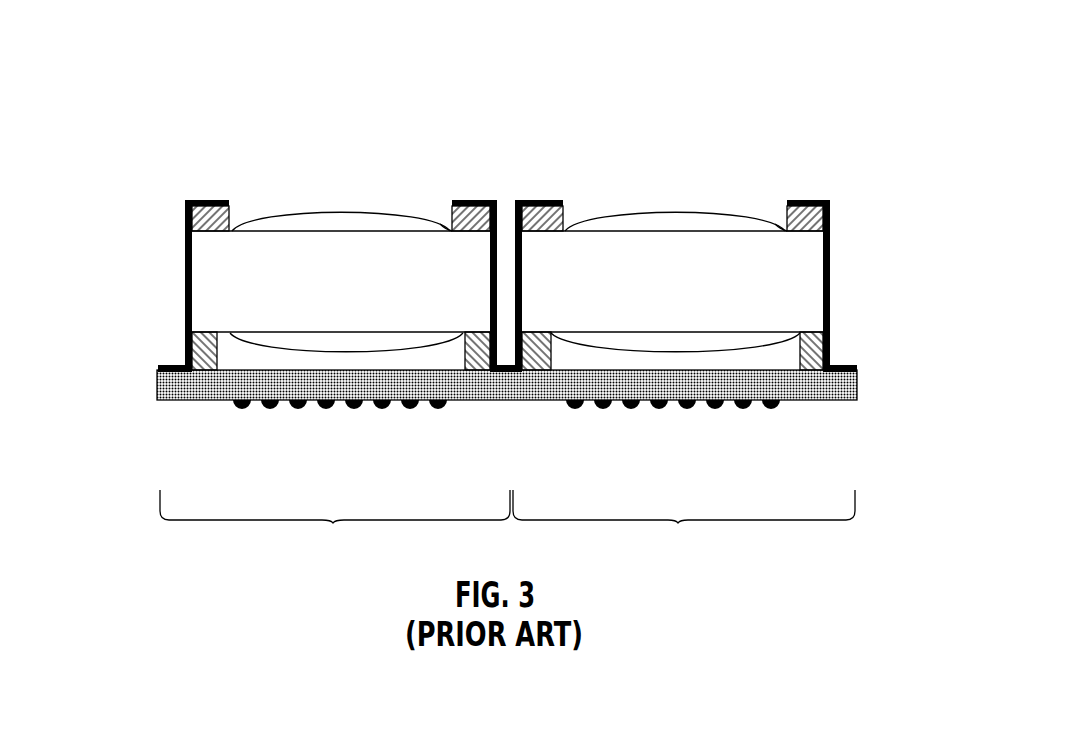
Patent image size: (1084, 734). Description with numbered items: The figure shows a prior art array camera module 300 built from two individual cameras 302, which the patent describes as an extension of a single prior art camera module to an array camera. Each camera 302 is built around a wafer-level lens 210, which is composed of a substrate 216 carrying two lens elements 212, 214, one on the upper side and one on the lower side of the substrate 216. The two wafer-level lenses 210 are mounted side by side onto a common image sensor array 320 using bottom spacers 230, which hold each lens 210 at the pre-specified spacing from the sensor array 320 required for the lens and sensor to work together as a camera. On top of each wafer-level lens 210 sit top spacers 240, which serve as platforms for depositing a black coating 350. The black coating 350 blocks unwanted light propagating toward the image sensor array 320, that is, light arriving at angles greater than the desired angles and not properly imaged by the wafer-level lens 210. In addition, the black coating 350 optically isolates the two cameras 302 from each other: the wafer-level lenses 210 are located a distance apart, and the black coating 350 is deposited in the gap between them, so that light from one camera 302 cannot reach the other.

The prior art array camera module 300 is at (150, 74).
The wafer-level lens 210 is at (299, 176).
The lens element 212 is at (338, 208).
The lens element 214 is at (190, 333).
The substrate 216 is at (445, 229).
The bottom spacer 230 is at (240, 354).
The top spacer 240 is at (238, 228).
The individual camera 302 is at (333, 523).
The image sensor array 320 is at (192, 401).
The black coating 350 is at (185, 232).